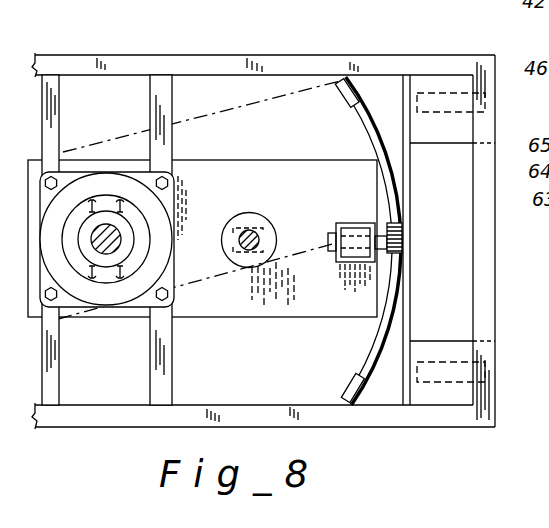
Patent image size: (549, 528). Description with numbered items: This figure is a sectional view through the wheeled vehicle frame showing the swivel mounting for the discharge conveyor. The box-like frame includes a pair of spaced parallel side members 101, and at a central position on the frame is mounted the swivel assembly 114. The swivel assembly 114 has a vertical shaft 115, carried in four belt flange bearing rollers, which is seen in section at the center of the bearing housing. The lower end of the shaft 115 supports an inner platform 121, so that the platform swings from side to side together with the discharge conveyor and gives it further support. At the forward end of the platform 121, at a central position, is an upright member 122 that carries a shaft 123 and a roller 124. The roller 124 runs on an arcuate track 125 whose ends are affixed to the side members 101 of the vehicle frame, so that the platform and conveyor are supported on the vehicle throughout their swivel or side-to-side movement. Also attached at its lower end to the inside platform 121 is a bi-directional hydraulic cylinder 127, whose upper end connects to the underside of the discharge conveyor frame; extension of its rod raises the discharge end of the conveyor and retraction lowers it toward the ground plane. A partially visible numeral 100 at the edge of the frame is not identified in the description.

The frame 100 is at (487, 351).
The side members 101 is at (188, 28).
The swivel assembly 114 is at (99, 178).
The vertical shaft 115 is at (118, 235).
The inner platform 121 is at (213, 168).
The upright member 122 is at (373, 239).
The shaft 123 is at (352, 228).
The roller 124 is at (395, 240).
The arcuate track 125 is at (370, 119).
The bi-directional hydraulic cylinder 127 is at (265, 255).